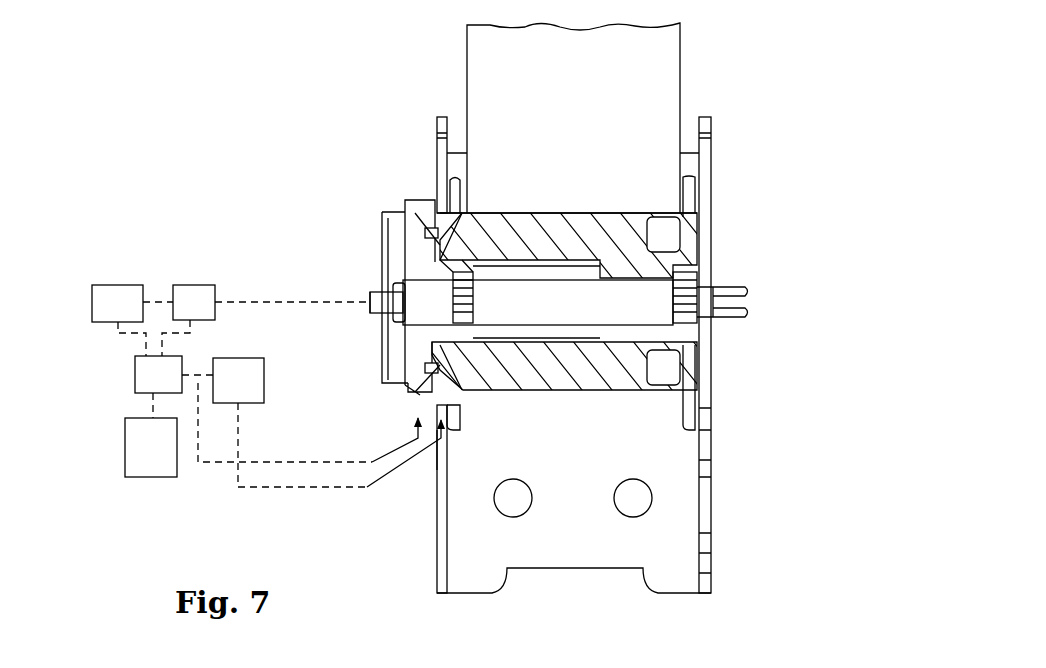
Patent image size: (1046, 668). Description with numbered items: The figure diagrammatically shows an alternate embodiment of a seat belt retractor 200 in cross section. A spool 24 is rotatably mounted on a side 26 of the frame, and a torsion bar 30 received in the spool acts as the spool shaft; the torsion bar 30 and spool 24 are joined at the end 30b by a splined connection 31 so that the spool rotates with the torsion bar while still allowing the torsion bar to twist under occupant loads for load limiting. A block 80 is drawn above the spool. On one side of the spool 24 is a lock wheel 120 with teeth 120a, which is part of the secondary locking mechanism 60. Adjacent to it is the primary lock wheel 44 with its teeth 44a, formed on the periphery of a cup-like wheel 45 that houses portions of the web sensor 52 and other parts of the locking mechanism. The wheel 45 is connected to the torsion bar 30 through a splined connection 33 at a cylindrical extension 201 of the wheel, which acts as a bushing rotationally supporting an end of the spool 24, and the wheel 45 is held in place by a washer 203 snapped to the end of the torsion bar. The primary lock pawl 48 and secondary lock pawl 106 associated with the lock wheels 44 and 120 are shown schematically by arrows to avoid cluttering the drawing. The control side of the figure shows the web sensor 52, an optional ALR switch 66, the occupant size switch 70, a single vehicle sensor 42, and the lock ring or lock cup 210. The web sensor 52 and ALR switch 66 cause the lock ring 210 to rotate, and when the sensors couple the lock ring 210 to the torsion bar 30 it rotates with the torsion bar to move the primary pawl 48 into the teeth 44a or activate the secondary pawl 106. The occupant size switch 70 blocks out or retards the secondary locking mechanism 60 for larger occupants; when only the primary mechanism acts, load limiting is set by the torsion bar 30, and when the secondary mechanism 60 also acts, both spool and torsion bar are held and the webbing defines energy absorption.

The motor 80 is at (668, 70).
The spool 24 is at (565, 225).
The torsion bar 30 is at (508, 285).
The splined connection 33 is at (470, 278).
The cylindrical extension 201 is at (458, 272).
The splined connection 31 is at (693, 270).
The end of torsion bar 30b is at (680, 333).
The frame side 26 is at (436, 540).
The retractor 200 is at (722, 218).
The cup-like wheel 45 is at (388, 207).
The lock teeth 44a is at (408, 205).
The lock wheel 44 is at (417, 393).
The lock wheel 120 is at (437, 215).
The teeth 120a is at (443, 203).
The washer 203 is at (392, 272).
The ALR switch 66 is at (115, 284).
The web sensor 52 is at (195, 284).
The lock ring 210 is at (134, 377).
The occupant size switch 70 is at (235, 358).
The vehicle sensor 42 is at (125, 450).
The lock pawl 48 is at (370, 462).
The lock pawl 106 is at (372, 480).
The secondary locking mechanism 60 is at (428, 452).